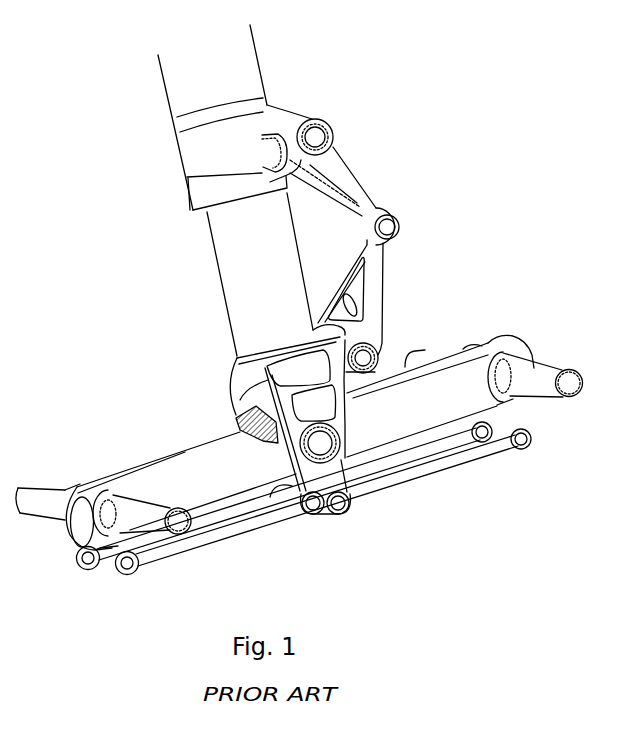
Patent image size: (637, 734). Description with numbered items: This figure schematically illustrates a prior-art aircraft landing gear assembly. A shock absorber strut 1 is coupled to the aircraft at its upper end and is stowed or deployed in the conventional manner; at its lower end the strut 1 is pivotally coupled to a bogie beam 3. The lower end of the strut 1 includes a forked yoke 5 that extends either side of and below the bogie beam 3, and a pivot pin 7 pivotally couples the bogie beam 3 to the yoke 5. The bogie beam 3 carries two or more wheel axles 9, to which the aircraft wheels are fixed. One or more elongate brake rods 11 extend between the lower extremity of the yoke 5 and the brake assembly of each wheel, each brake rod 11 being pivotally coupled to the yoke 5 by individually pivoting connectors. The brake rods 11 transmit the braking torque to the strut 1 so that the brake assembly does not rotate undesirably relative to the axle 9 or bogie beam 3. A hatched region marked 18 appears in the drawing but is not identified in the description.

The shock absorber strut 1 is at (196, 253).
The bogie beam 3 is at (450, 351).
The forked yoke 5 is at (305, 371).
The pivot pin 7 is at (343, 457).
The wheel axles 9 is at (40, 507).
The brake rods 11 is at (236, 535).
The bearing 18 is at (236, 414).